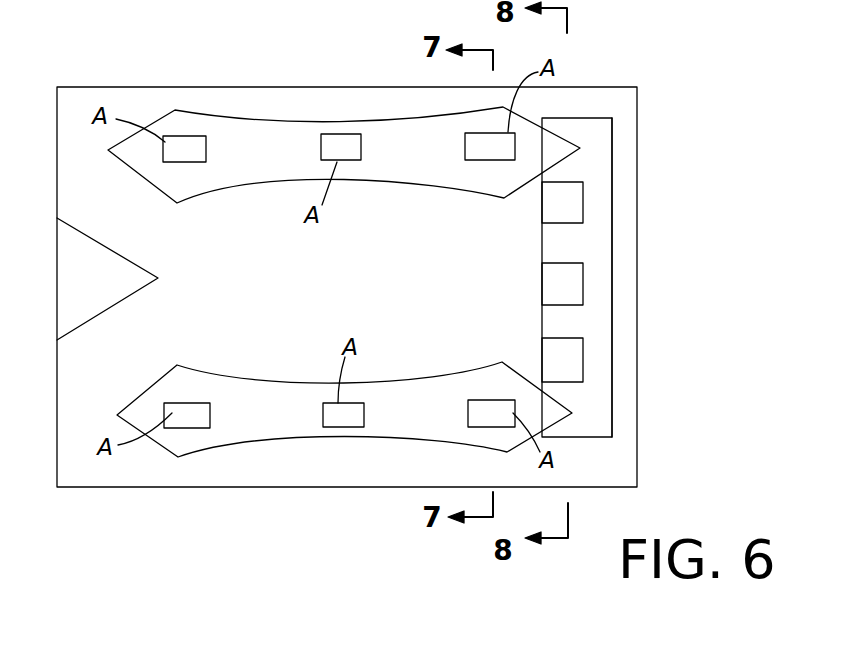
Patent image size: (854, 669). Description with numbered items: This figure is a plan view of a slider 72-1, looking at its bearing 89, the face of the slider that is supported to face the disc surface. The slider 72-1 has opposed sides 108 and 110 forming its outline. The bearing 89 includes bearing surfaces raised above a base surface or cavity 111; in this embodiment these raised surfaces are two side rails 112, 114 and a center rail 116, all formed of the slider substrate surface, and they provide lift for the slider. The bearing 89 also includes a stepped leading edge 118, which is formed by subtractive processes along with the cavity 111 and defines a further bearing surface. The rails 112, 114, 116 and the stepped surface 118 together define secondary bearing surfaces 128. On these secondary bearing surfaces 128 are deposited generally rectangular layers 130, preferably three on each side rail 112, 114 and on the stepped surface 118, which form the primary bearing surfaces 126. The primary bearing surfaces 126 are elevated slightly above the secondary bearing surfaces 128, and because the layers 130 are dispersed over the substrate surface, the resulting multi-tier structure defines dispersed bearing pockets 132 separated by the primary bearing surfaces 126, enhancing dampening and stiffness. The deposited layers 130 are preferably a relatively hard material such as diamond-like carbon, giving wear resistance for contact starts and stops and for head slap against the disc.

The slider 72-1 is at (617, 82).
The side 108 is at (247, 93).
The side 110 is at (143, 489).
The base surface or cavity 111 is at (257, 281).
The side rail 112 is at (377, 148).
The side rail 114 is at (240, 388).
The center rail 116 is at (78, 300).
The stepped leading edge 118 is at (598, 237).
The bearing 89 is at (612, 192).
The primary bearing surface 126 is at (180, 150).
The secondary bearing surface 128 is at (657, 302).
The layer 130 is at (168, 137).
The bearing pocket 132 is at (222, 143).